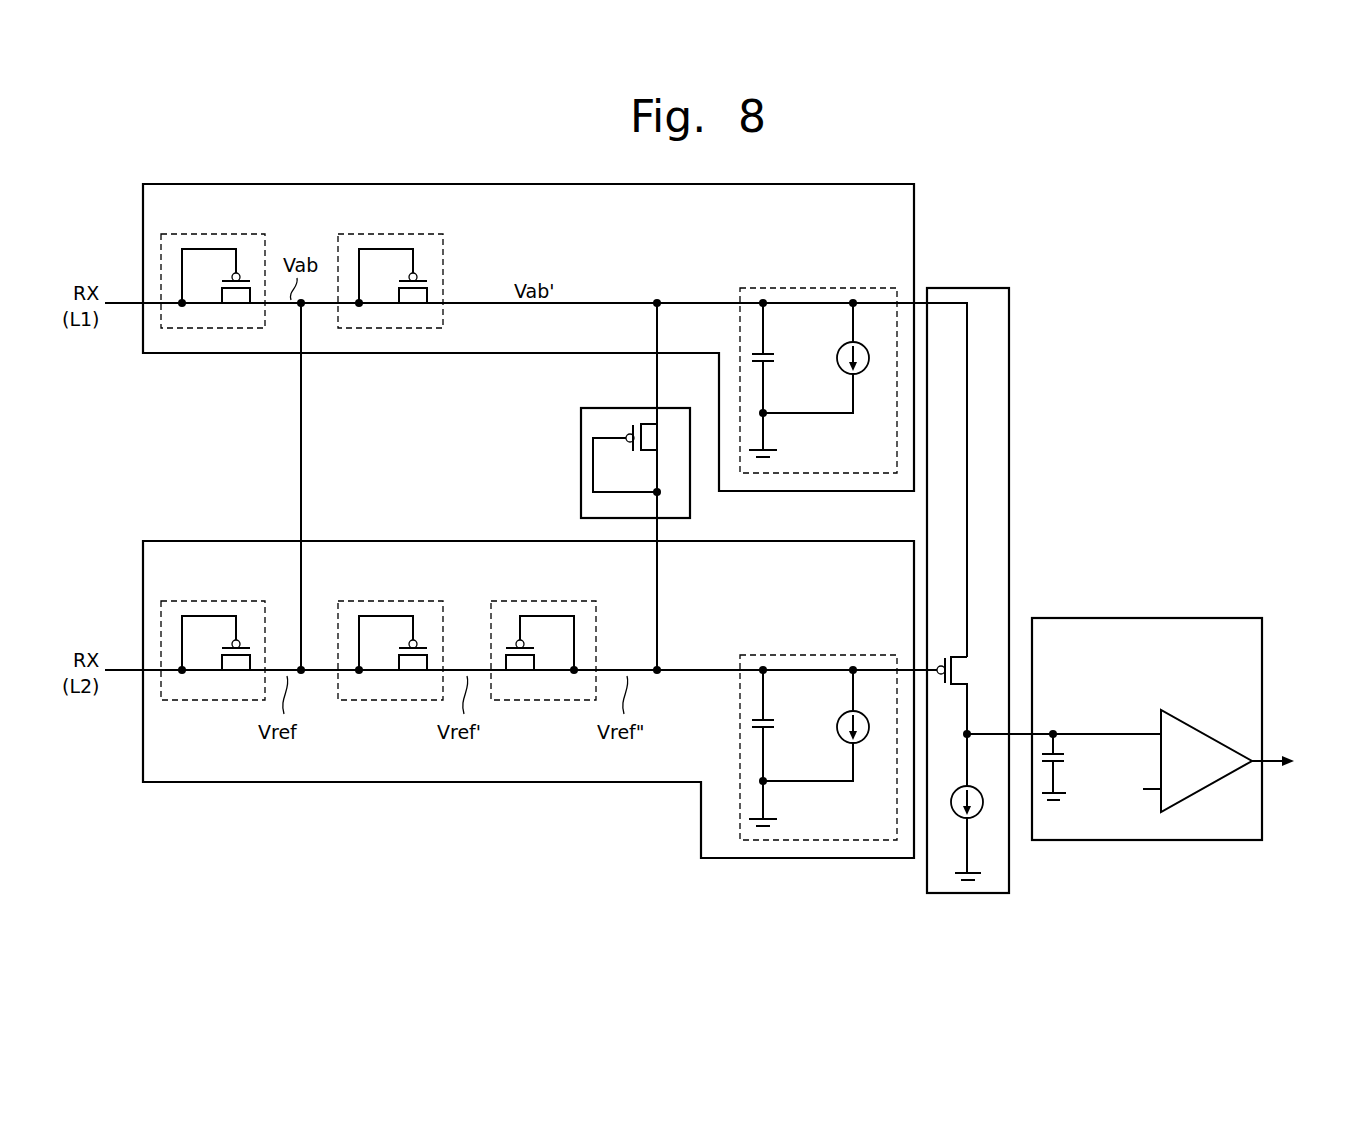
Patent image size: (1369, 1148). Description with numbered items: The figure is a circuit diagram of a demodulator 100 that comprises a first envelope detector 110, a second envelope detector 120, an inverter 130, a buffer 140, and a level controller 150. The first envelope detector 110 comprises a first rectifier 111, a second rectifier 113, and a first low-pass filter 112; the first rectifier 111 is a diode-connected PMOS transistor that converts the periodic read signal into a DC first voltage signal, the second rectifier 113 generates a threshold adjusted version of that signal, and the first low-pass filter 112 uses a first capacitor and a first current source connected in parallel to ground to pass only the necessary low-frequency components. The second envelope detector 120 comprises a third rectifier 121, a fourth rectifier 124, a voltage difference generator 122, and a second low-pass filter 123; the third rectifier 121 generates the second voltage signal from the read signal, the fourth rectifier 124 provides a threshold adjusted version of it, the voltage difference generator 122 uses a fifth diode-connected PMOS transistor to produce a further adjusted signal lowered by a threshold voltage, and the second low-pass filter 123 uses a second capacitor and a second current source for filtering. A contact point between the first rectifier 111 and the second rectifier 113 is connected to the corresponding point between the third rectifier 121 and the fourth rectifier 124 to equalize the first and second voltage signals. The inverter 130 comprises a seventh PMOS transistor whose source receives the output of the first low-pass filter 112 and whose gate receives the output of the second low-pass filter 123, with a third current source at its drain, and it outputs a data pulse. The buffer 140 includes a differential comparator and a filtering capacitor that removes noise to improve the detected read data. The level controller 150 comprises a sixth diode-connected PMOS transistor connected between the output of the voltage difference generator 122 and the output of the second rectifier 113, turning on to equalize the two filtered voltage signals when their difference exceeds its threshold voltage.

The demodulator 100 is at (1205, 228).
The first envelope detector 110 is at (492, 354).
The first rectifier 111 is at (227, 234).
The first low-pass filter 112 is at (856, 288).
The second rectifier 113 is at (405, 234).
The second envelope detector 120 is at (492, 783).
The third rectifier 121 is at (227, 601).
The voltage difference generator 122 is at (556, 601).
The second low-pass filter 123 is at (856, 655).
The fourth rectifier 124 is at (405, 601).
The inverter 130 is at (970, 288).
The buffer 140 is at (1225, 618).
The level controller 150 is at (617, 408).